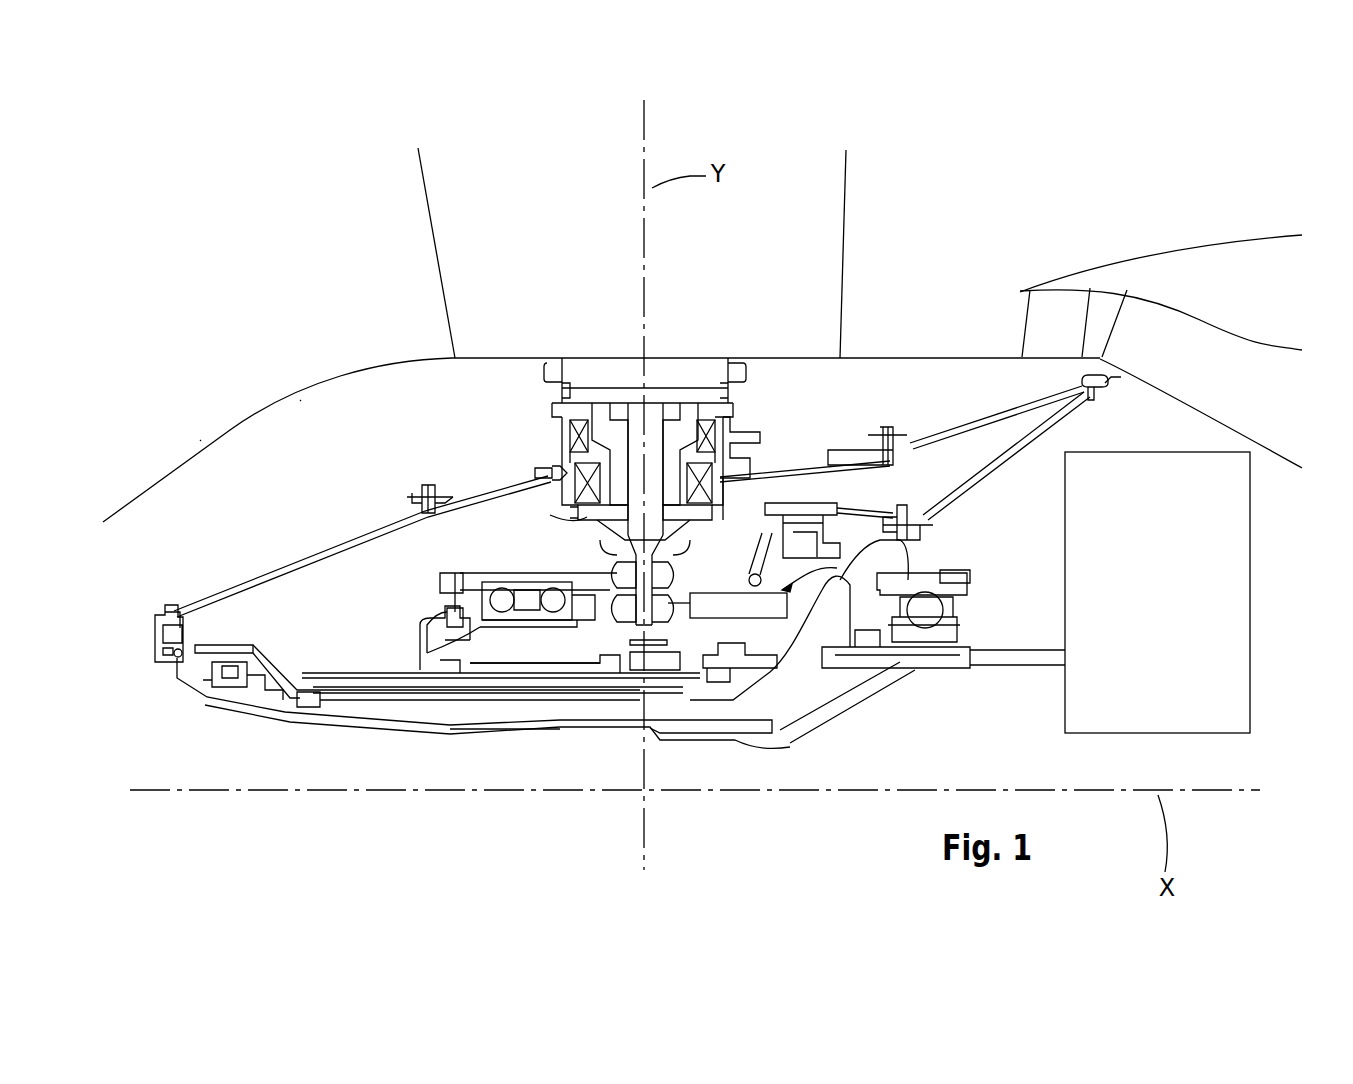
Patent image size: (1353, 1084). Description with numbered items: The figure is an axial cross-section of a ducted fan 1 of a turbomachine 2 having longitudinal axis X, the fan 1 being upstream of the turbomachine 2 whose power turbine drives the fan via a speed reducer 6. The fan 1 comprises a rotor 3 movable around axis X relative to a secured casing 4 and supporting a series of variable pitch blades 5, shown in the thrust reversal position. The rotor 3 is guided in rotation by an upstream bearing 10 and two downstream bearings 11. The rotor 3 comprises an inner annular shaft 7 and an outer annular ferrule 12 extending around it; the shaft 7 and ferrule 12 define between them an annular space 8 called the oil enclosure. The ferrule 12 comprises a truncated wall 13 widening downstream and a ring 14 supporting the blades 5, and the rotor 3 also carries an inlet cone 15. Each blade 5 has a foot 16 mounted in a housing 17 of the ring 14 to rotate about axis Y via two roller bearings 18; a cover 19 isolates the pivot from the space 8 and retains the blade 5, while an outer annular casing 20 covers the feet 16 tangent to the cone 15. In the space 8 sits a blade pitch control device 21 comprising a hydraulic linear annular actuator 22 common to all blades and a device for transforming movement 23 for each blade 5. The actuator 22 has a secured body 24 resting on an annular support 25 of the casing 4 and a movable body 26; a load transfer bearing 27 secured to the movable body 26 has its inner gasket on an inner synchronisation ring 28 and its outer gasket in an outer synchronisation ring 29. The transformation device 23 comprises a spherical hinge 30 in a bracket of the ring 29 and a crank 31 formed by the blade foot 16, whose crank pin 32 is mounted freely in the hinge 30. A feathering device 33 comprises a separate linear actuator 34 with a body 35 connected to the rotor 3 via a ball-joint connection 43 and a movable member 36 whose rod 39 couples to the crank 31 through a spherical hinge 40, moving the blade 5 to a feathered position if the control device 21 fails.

The ducted fan 1 is at (243, 345).
The turbomachine 2 is at (175, 338).
The rotor 3 is at (188, 582).
The secured casing 4 is at (1005, 472).
The variable pitch blade 5 is at (780, 233).
The speed reducer 6 is at (1170, 605).
The inner annular shaft 7 is at (402, 742).
The annular space 8 is at (324, 622).
The bearing 10 is at (200, 672).
The bearing 11 is at (925, 500).
The outer annular ferrule 12 is at (242, 580).
The truncated wall 13 is at (318, 566).
The ring 14 is at (563, 435).
The inlet cone 15 is at (160, 475).
The foot 16 is at (598, 410).
The housing 17 is at (665, 420).
The roller bearing 18 is at (750, 465).
The cover 19 is at (560, 492).
The outer annular casing 20 is at (505, 358).
The blade pitch control device 21 is at (465, 550).
The linear annular actuator 22 is at (405, 658).
The device for transforming movement 23 is at (718, 590).
The secured body 24 is at (470, 675).
The annular support 25 is at (503, 722).
The movable body 26 is at (540, 662).
The load transfer bearing 27 is at (580, 607).
The inner synchronisation ring 28 is at (510, 627).
The outer synchronisation ring 29 is at (525, 582).
The spherical hinge 30 is at (617, 565).
The crank 31 is at (684, 560).
The crank pin 32 is at (650, 632).
The feathering device 33 is at (768, 568).
The linear actuator 34 is at (840, 585).
The body 35 is at (752, 622).
The movable member 36 is at (675, 625).
The rod 39 is at (676, 600).
The spherical hinge 40 is at (622, 617).
The ball-joint connection 43 is at (840, 523).